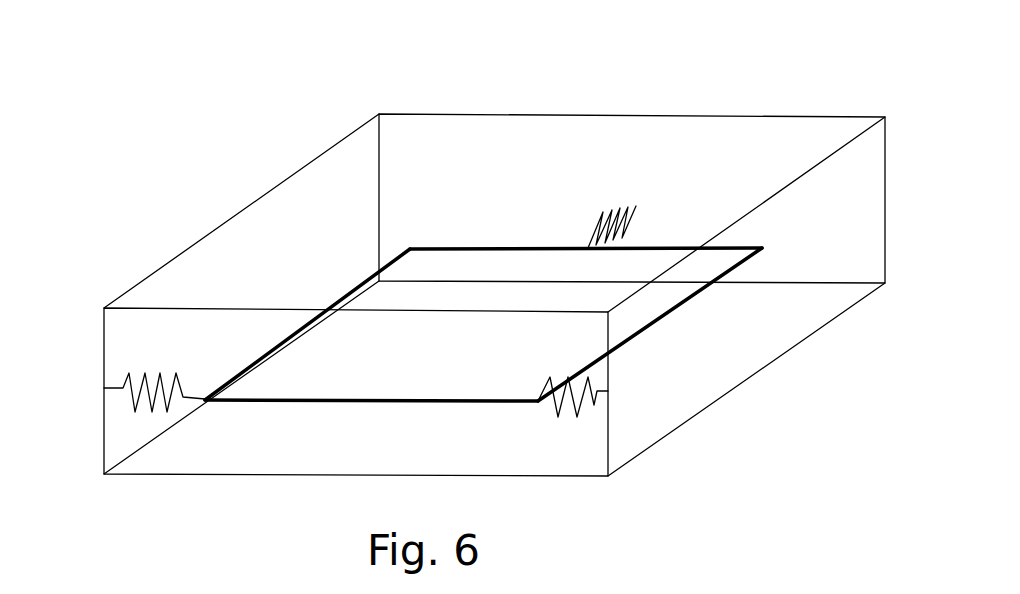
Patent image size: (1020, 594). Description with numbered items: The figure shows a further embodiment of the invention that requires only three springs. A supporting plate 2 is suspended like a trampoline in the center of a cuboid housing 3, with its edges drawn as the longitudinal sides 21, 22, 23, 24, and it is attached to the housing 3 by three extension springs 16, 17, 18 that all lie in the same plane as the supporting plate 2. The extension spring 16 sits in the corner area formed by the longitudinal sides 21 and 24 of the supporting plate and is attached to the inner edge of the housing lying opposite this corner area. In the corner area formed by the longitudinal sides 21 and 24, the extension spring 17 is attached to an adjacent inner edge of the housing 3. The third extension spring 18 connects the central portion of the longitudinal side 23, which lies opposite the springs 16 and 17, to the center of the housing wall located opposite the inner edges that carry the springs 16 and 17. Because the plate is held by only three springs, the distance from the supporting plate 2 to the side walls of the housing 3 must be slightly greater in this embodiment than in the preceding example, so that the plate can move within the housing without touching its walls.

The supporting plate 2 is at (513, 289).
The cuboid housing 3 is at (473, 115).
The extension spring 16 is at (143, 378).
The extension spring 17 is at (575, 408).
The third extension spring 18 is at (608, 210).
The longitudinal side 21 is at (360, 400).
The longitudinal side 22 is at (300, 330).
The longitudinal side 23 is at (532, 249).
The longitudinal side 24 is at (627, 345).